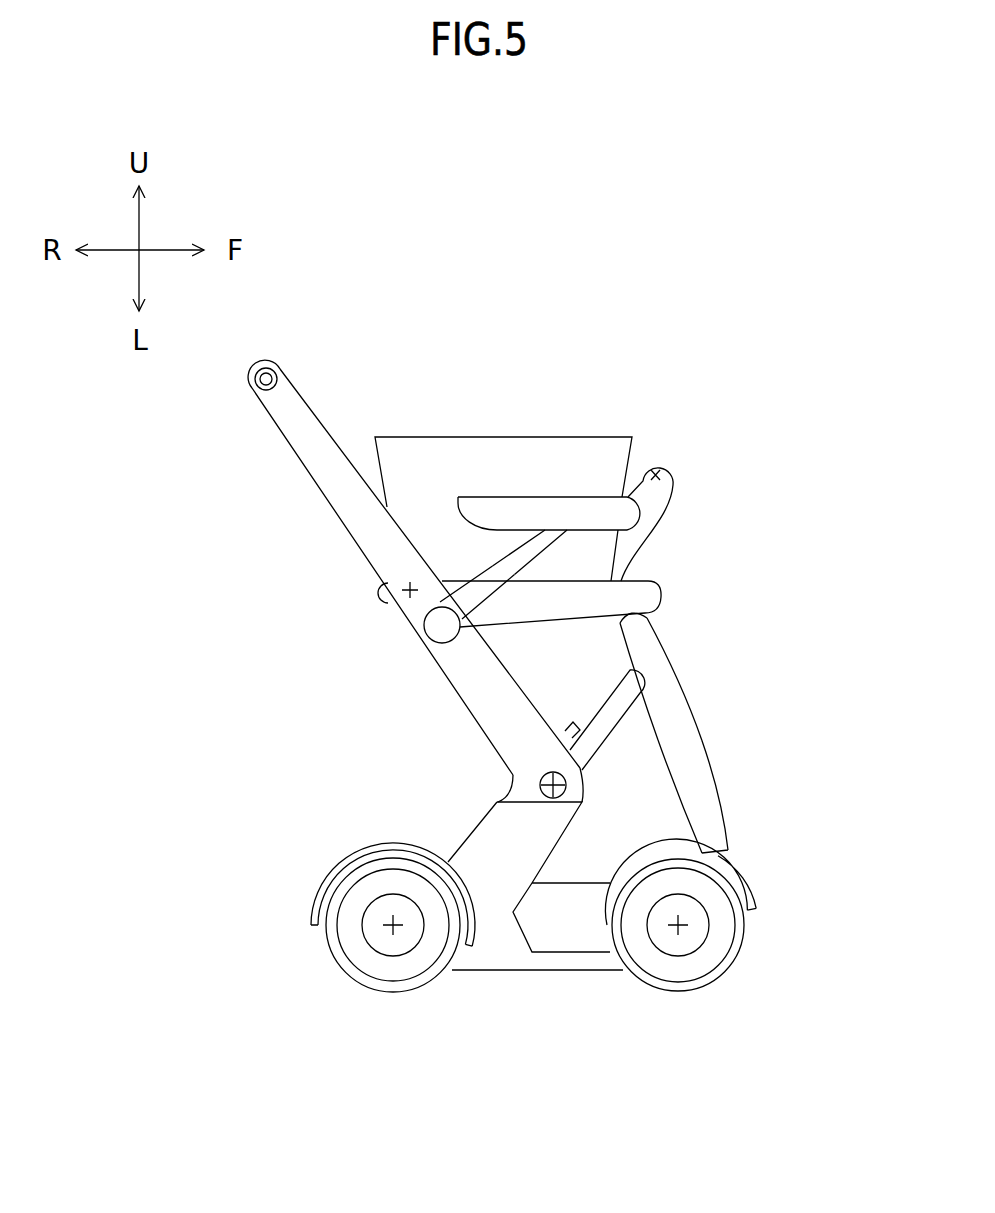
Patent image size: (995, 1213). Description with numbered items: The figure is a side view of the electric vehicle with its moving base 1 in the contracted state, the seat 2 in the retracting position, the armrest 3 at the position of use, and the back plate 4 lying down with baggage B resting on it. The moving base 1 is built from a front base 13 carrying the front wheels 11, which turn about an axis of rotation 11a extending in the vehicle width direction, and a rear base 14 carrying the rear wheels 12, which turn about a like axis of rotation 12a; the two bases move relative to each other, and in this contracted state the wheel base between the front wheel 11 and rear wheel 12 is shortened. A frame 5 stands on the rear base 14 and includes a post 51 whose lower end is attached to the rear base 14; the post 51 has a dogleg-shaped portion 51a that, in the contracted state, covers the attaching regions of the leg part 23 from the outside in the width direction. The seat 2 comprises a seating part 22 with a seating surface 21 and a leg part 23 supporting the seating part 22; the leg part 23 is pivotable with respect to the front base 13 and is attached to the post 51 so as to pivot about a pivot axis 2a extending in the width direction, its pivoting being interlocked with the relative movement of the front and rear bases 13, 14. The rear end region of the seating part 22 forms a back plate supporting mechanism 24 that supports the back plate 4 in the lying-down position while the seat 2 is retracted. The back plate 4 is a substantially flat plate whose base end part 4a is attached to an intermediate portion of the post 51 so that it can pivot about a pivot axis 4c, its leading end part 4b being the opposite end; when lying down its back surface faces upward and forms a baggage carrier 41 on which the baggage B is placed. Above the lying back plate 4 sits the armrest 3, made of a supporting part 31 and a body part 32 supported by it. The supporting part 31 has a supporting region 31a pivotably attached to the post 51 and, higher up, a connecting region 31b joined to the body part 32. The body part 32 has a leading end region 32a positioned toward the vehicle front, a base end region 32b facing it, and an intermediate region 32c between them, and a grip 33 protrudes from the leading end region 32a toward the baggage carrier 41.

The moving base 1 is at (340, 845).
The seat 2 is at (692, 725).
The pivot axis 2a is at (541, 783).
The armrest 3 is at (690, 478).
The back plate 4 is at (546, 583).
The base end part 4a is at (665, 584).
The leading end part 4b is at (397, 591).
The pivot axis 4c is at (383, 601).
The frame 5 is at (392, 698).
The front wheel 11 is at (702, 962).
The axis of rotation 11a is at (680, 938).
The rear wheel 12 is at (357, 961).
The axis of rotation 12a is at (390, 930).
The front base 13 is at (756, 895).
The rear base 14 is at (322, 891).
The seating surface 21 is at (712, 763).
The seating part 22 is at (670, 723).
The leg part 23 is at (597, 732).
The back plate supporting mechanism 24 is at (645, 620).
The supporting part 31 is at (425, 617).
The supporting region 31a is at (439, 631).
The connecting region 31b is at (512, 553).
The body part 32 is at (555, 425).
The leading end region 32a is at (620, 512).
The base end region 32b is at (480, 512).
The intermediate region 32c is at (552, 512).
The grip 33 is at (664, 478).
The baggage carrier 41 is at (642, 550).
The post 51 is at (347, 482).
The dogleg-shaped portion 51a is at (582, 792).
The baggage B is at (420, 433).